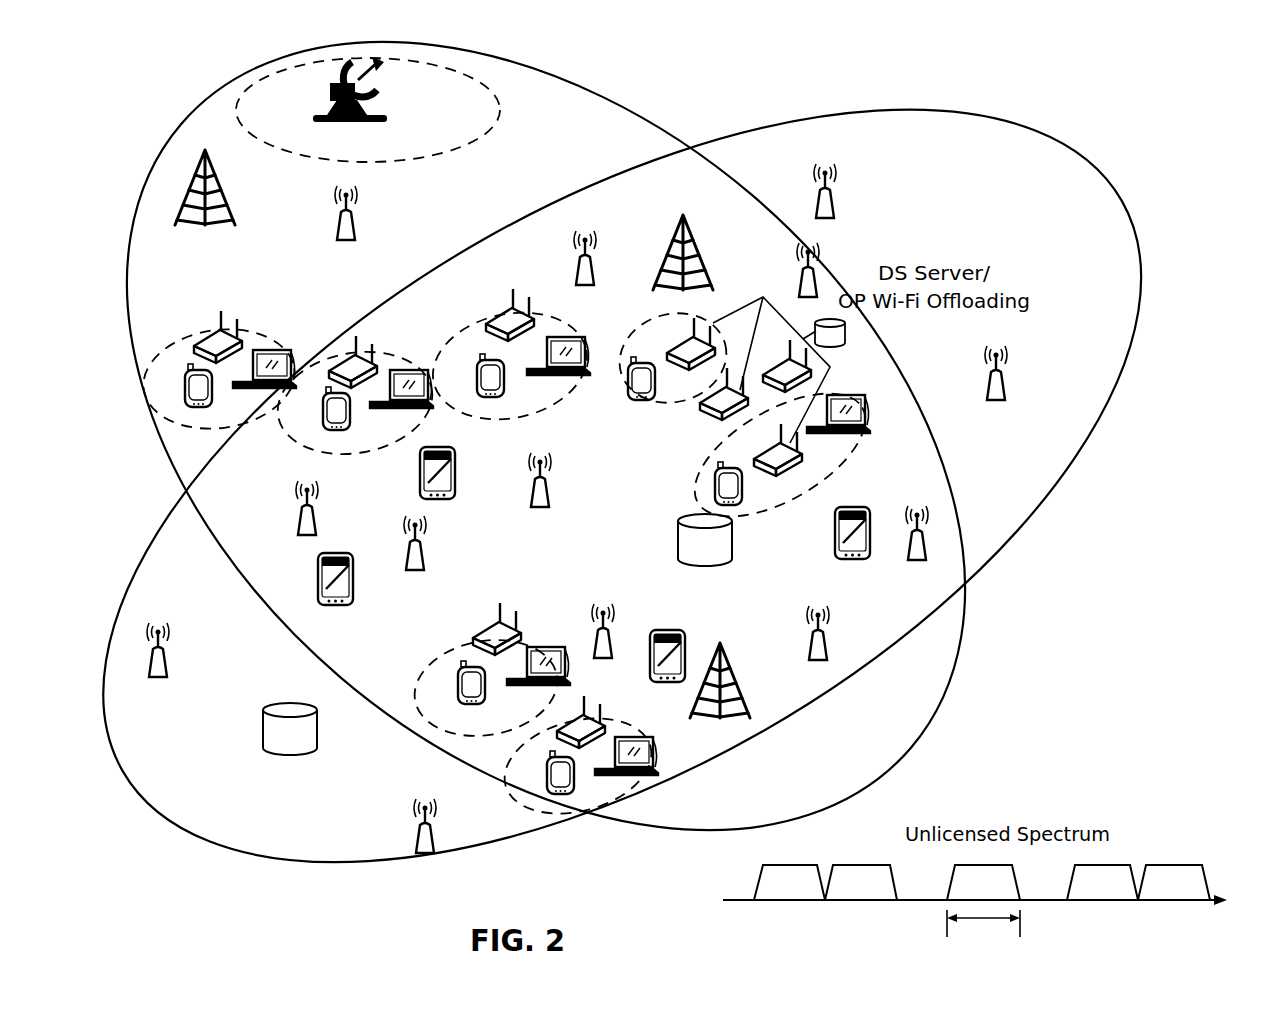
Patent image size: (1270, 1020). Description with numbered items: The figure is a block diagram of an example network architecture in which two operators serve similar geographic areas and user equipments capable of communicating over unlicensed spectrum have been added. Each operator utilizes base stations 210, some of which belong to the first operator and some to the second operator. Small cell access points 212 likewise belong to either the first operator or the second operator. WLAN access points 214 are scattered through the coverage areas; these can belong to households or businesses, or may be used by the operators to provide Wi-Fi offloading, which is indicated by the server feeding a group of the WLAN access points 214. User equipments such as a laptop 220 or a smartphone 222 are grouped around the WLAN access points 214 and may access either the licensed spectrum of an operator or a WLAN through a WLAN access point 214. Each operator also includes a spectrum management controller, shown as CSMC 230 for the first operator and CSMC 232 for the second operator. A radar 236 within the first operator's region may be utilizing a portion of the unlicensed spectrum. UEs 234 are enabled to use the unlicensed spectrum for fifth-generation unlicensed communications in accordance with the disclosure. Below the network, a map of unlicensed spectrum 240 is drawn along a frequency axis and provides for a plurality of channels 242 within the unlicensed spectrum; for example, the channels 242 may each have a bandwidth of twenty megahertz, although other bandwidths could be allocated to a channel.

The base stations 210 is at (222, 190).
The small cell access points 212 is at (357, 228).
The WLAN access points 214 is at (227, 335).
The laptop 220 is at (274, 355).
The smartphone 222 is at (195, 370).
The CSMC 230 is at (706, 568).
The CSMC 232 is at (292, 756).
The UEs 234 is at (453, 478).
The radar 236 is at (368, 109).
The map of unlicensed spectrum 240 is at (740, 900).
The channels 242 is at (787, 890).